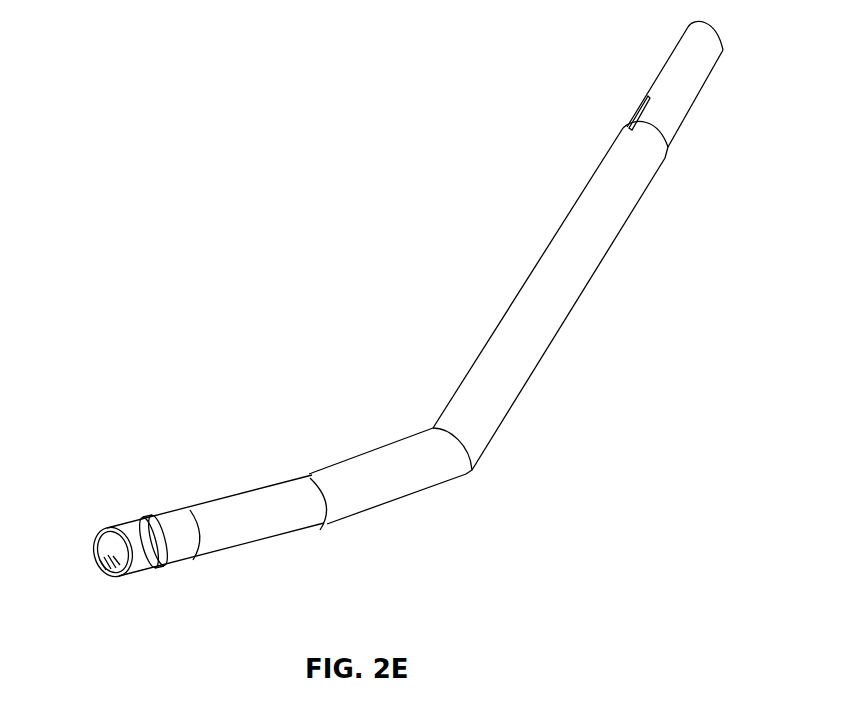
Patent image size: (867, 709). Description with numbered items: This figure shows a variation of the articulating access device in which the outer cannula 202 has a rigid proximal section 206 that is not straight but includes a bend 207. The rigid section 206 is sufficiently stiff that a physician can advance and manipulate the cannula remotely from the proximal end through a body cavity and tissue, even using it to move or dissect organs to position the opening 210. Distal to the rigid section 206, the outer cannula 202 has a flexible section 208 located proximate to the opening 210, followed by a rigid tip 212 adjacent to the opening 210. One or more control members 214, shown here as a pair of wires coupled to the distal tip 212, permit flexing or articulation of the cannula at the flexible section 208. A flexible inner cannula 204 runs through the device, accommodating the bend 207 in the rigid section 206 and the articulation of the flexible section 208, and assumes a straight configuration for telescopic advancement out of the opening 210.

The outer cannula 202 is at (568, 210).
The flexible inner cannula 204 is at (130, 573).
The rigid section 206 is at (555, 312).
The bend 207 is at (470, 475).
The flexible section 208 is at (260, 502).
The opening 210 is at (158, 568).
The rigid tip 212 is at (165, 517).
The control member 214 is at (641, 105).